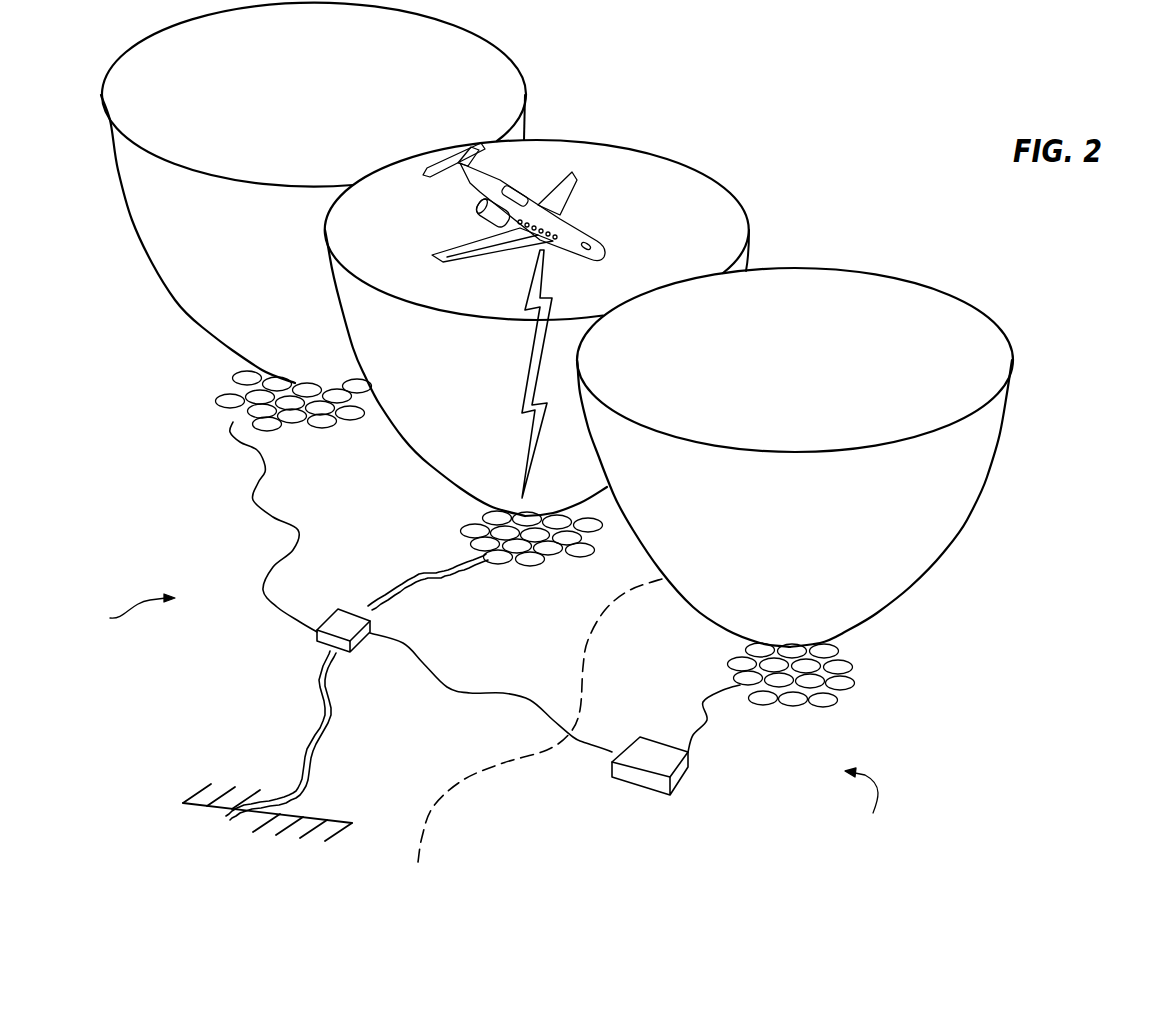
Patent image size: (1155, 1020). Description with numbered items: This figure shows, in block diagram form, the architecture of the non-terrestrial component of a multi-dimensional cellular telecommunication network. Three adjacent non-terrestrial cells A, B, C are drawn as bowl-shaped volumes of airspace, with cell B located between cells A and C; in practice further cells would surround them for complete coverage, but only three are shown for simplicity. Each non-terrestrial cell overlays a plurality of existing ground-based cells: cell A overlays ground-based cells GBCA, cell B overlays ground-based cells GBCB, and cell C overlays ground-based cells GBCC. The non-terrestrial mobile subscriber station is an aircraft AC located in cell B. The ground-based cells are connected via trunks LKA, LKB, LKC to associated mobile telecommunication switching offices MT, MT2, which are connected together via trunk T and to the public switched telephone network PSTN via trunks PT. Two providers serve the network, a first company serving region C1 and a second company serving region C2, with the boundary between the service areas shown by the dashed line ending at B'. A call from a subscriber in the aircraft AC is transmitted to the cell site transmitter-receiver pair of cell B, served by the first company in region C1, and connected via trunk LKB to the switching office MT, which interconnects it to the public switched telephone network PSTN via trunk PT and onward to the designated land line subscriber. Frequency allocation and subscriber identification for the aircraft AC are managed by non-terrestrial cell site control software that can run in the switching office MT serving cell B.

The non-terrestrial cell A is at (313, 193).
The non-terrestrial cell B is at (537, 328).
The non-terrestrial cell C is at (795, 457).
The aircraft AC is at (583, 220).
The ground-based cells GBCA is at (222, 400).
The ground-based cells GBCB is at (460, 531).
The ground-based cells GBCC is at (847, 680).
The trunk LKA is at (265, 463).
The trunk LKB is at (427, 578).
The trunk LKC is at (712, 735).
The trunk T is at (505, 692).
The trunk PT is at (307, 740).
The public switched telephone network PSTN is at (288, 822).
The mobile telecommunication switching office MT is at (317, 631).
The mobile telecommunication switching office MT2 is at (633, 777).
The dashed line B– B' is at (538, 725).
The region C1 is at (127, 613).
The region C2 is at (866, 806).